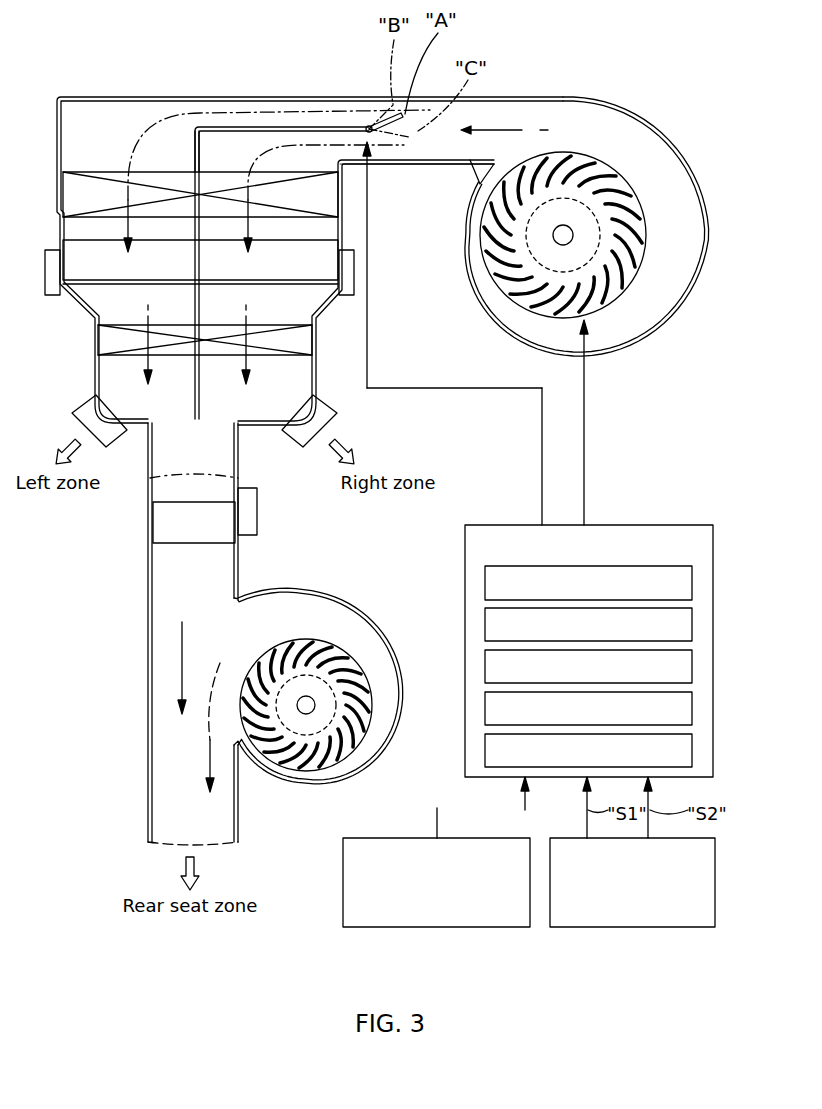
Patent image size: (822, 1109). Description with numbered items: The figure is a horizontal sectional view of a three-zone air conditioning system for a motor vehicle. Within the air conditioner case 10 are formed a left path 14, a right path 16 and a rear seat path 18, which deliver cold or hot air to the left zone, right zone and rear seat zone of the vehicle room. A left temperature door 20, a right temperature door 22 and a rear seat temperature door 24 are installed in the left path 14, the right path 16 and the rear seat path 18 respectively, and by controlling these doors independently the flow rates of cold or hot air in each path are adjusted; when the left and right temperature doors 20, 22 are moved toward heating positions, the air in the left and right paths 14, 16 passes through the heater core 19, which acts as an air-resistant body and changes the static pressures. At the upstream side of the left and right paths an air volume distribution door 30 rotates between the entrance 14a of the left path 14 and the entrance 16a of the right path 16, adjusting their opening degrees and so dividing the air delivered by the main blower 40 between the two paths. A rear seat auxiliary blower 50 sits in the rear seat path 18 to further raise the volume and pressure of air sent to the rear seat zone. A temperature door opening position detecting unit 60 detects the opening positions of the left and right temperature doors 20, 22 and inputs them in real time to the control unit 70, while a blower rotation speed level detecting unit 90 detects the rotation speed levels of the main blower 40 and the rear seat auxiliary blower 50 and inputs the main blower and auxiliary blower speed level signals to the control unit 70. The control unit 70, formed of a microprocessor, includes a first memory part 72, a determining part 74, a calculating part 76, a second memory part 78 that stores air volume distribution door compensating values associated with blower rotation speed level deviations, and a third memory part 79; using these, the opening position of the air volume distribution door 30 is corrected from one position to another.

The air conditioner case 10 is at (300, 96).
The left path 14 is at (168, 244).
The entrance of the left path 14a is at (358, 116).
The right path 16 is at (290, 238).
The entrance of the right path 16a is at (354, 158).
The rear seat path 18 is at (180, 581).
The heater core 19 is at (302, 340).
The left temperature door 20 is at (80, 248).
The right temperature door 22 is at (343, 263).
The rear seat temperature door 24 is at (213, 532).
The air volume distribution door 30 is at (405, 118).
The main blower 40 is at (597, 300).
The rear seat auxiliary blower 50 is at (362, 680).
The temperature door opening position detecting unit 60 is at (437, 927).
The control unit 70 is at (714, 548).
The first memory part 72 is at (693, 751).
The determining part 74 is at (693, 625).
The calculating part 76 is at (693, 583).
The second memory part 78 is at (693, 709).
The third memory part 79 is at (693, 667).
The blower rotation speed level detecting unit 90 is at (632, 927).